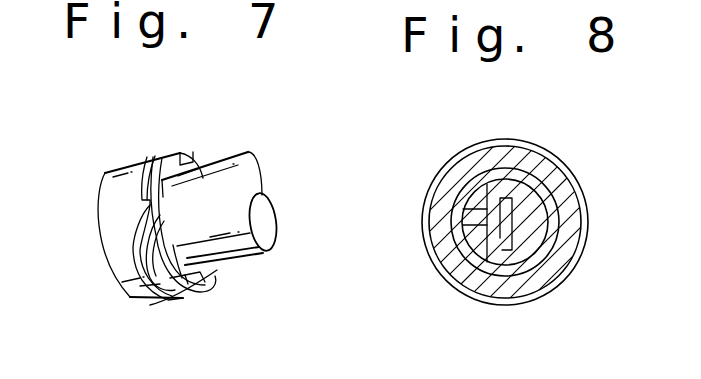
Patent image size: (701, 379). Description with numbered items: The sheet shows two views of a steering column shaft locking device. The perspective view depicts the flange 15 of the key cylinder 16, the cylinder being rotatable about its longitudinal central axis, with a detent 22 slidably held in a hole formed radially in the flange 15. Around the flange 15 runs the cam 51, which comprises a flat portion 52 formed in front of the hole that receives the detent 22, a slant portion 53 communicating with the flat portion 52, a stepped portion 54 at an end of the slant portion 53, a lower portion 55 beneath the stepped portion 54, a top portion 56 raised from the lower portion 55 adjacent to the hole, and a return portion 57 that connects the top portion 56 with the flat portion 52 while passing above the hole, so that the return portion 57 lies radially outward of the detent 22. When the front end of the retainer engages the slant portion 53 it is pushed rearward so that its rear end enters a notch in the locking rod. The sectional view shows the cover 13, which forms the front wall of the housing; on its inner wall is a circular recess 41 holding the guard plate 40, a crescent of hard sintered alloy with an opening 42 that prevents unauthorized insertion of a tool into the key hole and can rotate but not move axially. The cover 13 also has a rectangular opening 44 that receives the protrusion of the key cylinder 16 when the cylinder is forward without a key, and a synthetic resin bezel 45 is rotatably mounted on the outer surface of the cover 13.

In FIG. 8, the cover 13 is at (547, 168).
In FIG. 7, the flange 15 is at (98, 226).
In FIG. 7, the key cylinder 16 is at (237, 172).
In FIG. 7, the detent 22 is at (193, 287).
In FIG. 8, the guard plate 40 is at (522, 253).
In FIG. 8, the circular recess 41 is at (465, 245).
In FIG. 8, the opening 42 is at (502, 247).
In FIG. 8, the rectangular opening 44 is at (462, 217).
In FIG. 8, the bezel 45 is at (567, 278).
In FIG. 7, the cam 51 is at (165, 313).
In FIG. 7, the flat portion 52 is at (157, 303).
In FIG. 7, the slant portion 53 is at (128, 250).
In FIG. 7, the stepped portion 54 is at (147, 160).
In FIG. 7, the lower portion 55 is at (163, 197).
In FIG. 7, the top portion 56 is at (212, 275).
In FIG. 7, the return portion 57 is at (177, 293).